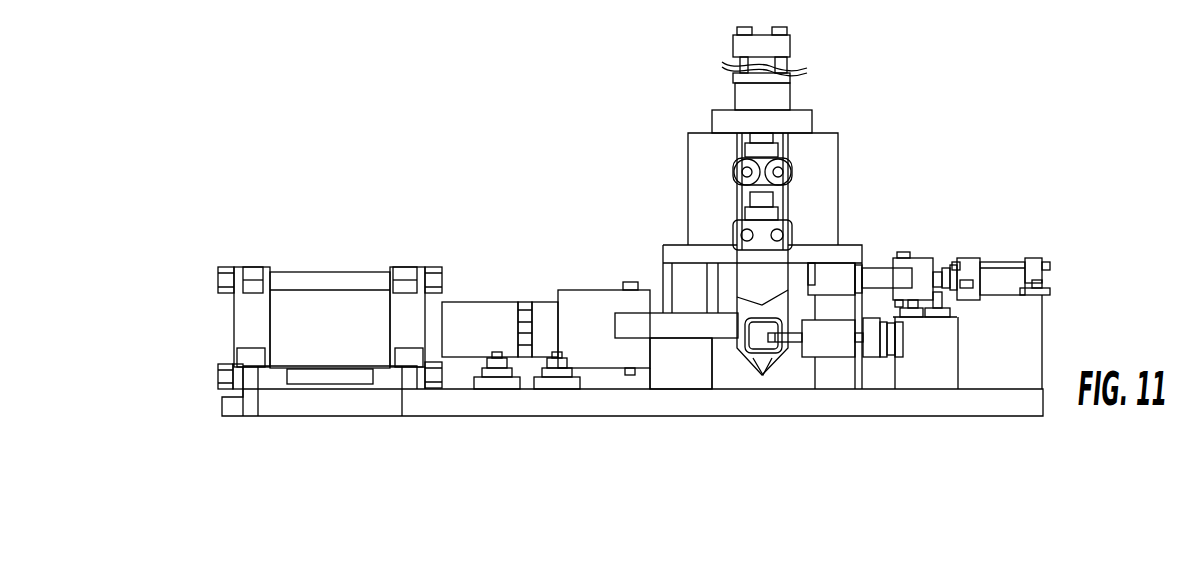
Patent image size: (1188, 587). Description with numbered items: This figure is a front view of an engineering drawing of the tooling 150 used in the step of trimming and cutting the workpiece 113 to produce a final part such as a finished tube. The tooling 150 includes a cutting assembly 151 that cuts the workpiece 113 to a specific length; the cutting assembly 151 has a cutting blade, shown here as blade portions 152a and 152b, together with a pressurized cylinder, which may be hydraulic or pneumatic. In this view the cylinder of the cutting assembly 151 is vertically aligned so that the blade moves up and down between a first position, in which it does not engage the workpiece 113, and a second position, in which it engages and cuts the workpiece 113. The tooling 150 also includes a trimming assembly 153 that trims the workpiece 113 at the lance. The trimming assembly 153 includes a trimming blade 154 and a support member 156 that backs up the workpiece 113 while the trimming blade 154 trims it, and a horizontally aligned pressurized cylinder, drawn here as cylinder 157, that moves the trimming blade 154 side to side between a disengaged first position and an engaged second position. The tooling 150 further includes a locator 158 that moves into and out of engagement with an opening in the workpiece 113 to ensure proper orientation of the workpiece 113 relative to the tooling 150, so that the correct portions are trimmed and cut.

The tooling 150 is at (425, 160).
The cutting assembly 151 is at (812, 201).
The nozzle body 152a is at (753, 283).
The feed roller assembly 152b is at (775, 155).
The trimming assembly 153 is at (584, 282).
The trimming blade 154 is at (687, 317).
The support member 156 is at (783, 349).
The actuator cylinder 157 is at (475, 312).
The locator 158 is at (877, 375).
The workpiece 113 is at (783, 322).